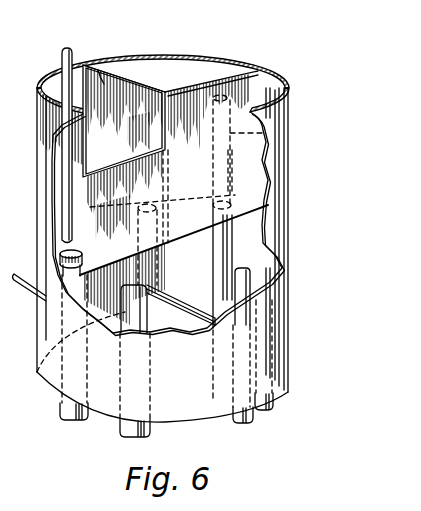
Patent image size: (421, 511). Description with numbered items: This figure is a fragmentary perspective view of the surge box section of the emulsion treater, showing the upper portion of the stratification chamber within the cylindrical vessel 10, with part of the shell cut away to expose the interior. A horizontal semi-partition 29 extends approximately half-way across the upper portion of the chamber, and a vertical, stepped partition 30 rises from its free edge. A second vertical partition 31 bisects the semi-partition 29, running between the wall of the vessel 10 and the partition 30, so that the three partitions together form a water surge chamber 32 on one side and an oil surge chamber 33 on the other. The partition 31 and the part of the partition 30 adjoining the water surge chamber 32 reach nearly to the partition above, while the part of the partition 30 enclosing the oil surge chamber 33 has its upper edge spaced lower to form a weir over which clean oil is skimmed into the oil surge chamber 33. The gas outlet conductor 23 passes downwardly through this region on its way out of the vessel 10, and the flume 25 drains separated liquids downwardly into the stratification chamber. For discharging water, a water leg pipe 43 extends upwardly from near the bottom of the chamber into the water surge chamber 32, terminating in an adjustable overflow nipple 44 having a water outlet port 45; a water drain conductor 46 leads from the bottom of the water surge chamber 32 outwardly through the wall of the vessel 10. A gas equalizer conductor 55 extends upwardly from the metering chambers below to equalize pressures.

The vessel 10 is at (281, 293).
The gas outlet conductor 23 is at (62, 61).
The flume 25 is at (122, 427).
The semi-partition 29 is at (68, 238).
The vertical stepped partition 30 is at (233, 88).
The second vertical partition 31 is at (86, 65).
The water surge chamber 32 is at (162, 62).
The oil surge chamber 33 is at (88, 135).
The water leg pipe 43 is at (222, 238).
The adjustable overflow nipple 44 is at (289, 155).
The water outlet port 45 is at (288, 119).
The water drain conductor 46 is at (182, 296).
The gas equalizer conductor 55 is at (233, 415).